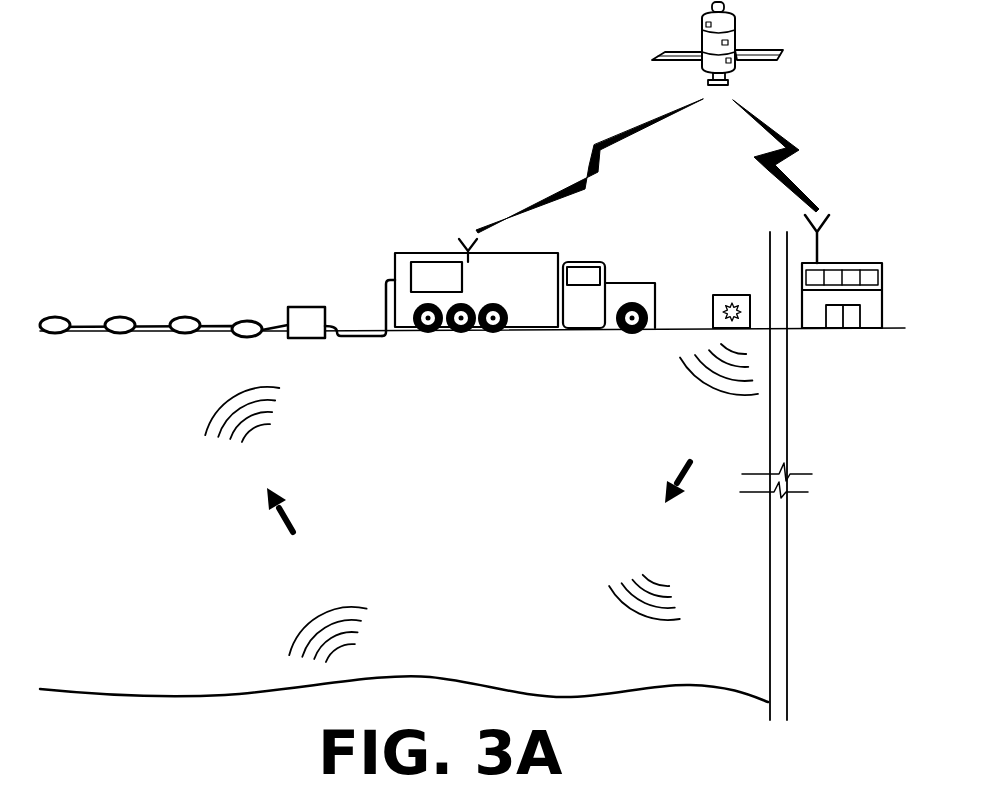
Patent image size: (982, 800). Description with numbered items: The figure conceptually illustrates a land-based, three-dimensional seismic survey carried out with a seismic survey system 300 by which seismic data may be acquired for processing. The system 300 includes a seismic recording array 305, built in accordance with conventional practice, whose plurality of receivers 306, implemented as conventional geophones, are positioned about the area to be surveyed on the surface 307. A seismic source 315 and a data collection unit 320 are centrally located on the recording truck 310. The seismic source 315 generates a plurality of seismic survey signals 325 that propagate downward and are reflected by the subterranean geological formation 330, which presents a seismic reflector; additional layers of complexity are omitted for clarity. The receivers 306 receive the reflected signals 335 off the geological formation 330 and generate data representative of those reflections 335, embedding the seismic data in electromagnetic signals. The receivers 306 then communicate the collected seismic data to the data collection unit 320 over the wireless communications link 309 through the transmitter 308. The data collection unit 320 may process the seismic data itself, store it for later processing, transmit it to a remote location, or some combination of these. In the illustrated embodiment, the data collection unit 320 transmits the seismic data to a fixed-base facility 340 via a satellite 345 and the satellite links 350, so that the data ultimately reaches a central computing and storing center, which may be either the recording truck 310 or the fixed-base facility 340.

The seismic survey system 300 is at (192, 117).
The seismic recording array 305 is at (120, 241).
The receivers 306 is at (57, 316).
The surface 307 is at (358, 340).
The data collection unit / transmitter 308 is at (306, 307).
The communications link 309 is at (387, 276).
The recording truck 310 is at (556, 232).
The seismic source 315 is at (716, 296).
The data collection unit 320 is at (420, 262).
The seismic survey signals 325 is at (674, 397).
The subterranean geological formation 330 is at (683, 683).
The reflected signals 335 is at (277, 450).
The fixed-base facility 340 is at (848, 330).
The satellite 345 is at (700, 33).
The satellite links 350 is at (585, 148).